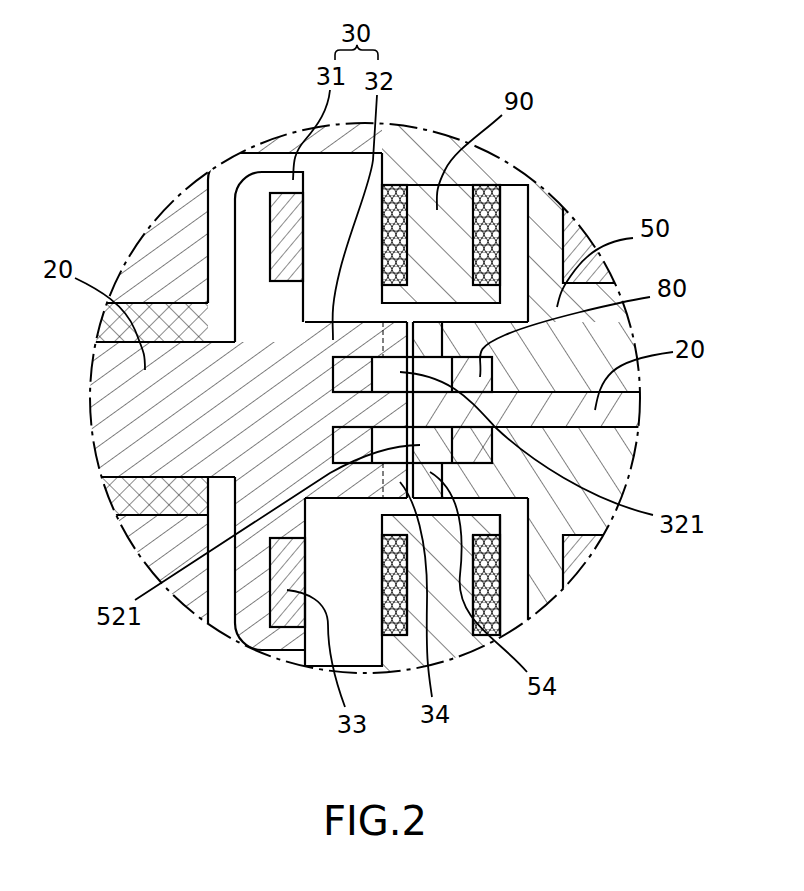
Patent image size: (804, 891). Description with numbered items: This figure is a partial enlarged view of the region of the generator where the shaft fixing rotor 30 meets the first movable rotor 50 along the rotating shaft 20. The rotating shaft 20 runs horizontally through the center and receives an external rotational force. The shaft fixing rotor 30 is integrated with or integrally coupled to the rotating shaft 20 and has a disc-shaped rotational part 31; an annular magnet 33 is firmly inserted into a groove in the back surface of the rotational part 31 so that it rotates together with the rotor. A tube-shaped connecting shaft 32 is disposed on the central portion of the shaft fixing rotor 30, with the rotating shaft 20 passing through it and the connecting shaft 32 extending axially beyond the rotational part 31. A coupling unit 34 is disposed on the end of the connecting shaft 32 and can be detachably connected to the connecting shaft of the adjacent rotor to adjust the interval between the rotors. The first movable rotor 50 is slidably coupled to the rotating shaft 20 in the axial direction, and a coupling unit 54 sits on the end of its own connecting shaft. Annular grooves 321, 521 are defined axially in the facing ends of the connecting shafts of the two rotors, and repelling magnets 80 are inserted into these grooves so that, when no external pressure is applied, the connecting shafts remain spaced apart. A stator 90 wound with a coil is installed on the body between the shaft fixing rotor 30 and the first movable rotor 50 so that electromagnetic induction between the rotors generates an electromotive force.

The rotating shaft 20 is at (145, 370).
The shaft fixing rotor 30 is at (368, 343).
The rotational part 31 is at (293, 180).
The connecting shaft 32 is at (333, 340).
The annular magnet 33 is at (287, 590).
The coupling unit 34 is at (400, 482).
The first movable rotor 50 is at (557, 307).
The coupling unit 54 is at (430, 472).
The repelling magnet 80 is at (480, 377).
The stator 90 is at (437, 210).
The annular groove 321 is at (400, 372).
The annular groove 521 is at (420, 445).